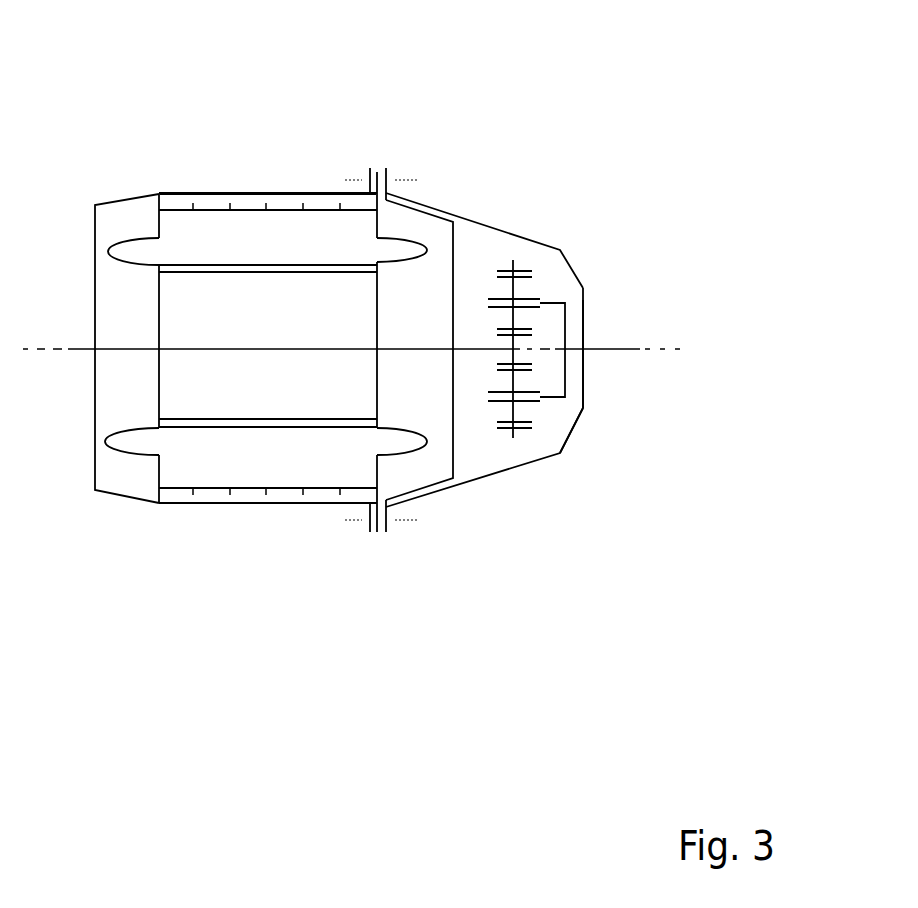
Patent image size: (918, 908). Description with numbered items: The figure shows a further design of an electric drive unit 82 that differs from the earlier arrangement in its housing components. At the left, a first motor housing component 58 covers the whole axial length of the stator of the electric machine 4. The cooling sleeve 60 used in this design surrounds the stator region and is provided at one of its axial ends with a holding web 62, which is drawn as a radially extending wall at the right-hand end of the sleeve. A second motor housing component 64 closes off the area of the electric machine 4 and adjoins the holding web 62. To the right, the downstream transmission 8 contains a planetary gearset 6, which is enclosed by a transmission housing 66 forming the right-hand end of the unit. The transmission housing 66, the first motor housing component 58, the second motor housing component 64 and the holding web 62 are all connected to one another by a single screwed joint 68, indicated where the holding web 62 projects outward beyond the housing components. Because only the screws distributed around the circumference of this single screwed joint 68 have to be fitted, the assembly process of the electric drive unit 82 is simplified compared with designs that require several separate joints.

The electric machine 4 is at (243, 170).
The planetary gearset 6 is at (535, 288).
The transmission 8 is at (545, 233).
The first motor housing component 58 is at (130, 197).
The cooling sleeve 60 is at (203, 193).
The holding web 62 is at (353, 197).
The second motor housing component 64 is at (457, 285).
The transmission housing 66 is at (578, 427).
The single screwed joint 68 is at (377, 163).
The electric drive unit 82 is at (452, 157).